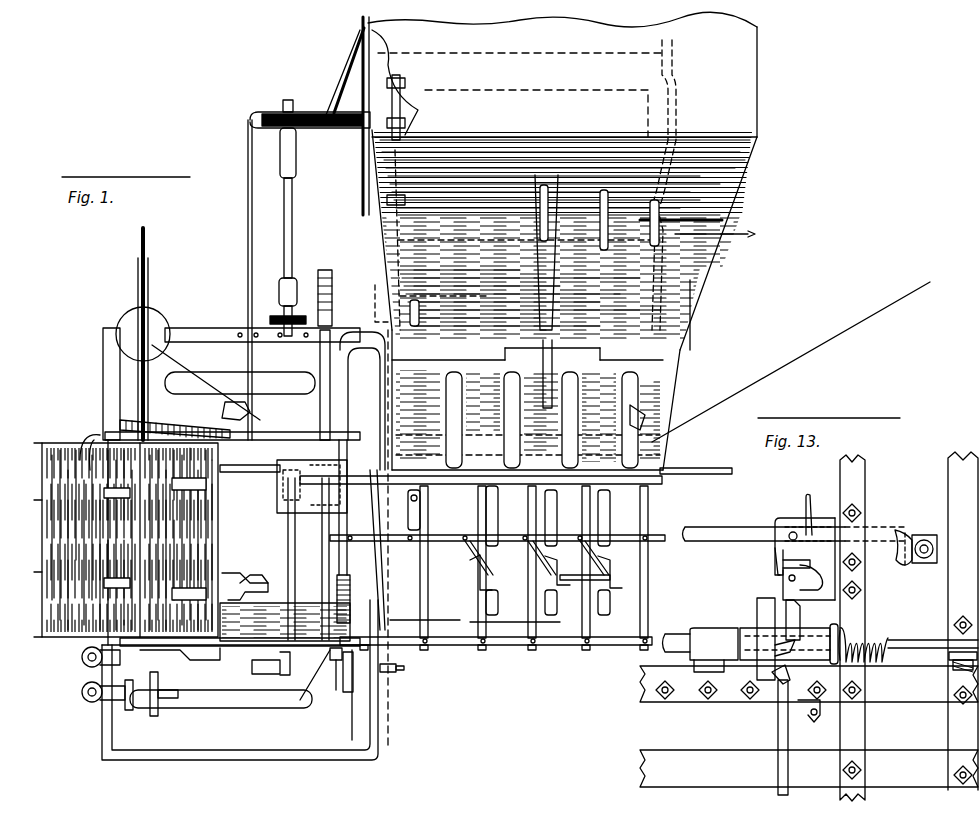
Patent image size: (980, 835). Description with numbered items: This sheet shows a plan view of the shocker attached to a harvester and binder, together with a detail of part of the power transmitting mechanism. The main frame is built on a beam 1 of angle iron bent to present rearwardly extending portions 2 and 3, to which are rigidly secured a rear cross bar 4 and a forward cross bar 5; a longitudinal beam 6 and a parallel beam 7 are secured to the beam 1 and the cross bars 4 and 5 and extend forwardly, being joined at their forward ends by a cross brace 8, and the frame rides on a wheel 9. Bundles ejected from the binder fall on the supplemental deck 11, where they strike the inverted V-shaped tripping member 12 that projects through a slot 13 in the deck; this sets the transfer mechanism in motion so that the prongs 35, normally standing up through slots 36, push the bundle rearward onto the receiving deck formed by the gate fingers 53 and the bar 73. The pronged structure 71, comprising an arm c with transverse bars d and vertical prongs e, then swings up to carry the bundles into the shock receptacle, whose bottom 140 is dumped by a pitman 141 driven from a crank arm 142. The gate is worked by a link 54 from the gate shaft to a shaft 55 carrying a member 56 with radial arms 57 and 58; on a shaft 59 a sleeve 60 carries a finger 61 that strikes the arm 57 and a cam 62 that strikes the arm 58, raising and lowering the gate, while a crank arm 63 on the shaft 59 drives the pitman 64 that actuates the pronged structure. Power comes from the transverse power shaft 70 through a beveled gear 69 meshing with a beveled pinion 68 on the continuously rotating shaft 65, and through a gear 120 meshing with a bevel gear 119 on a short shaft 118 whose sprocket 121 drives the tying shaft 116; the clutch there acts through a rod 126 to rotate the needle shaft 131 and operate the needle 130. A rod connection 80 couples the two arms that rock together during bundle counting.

In FIG. 1, the beam 1 is at (360, 727).
In FIG. 13, the beam 1 is at (809, 768).
In FIG. 1, the rearwardly extending portion 2 is at (250, 760).
In FIG. 1, the rearwardly extending portion 3 is at (212, 334).
In FIG. 1, the rear cross bar 4 is at (107, 377).
In FIG. 1, the forward cross bar 5 is at (336, 692).
In FIG. 13, the forward cross bar 5 is at (932, 697).
In FIG. 1, the longitudinal beam 6 is at (252, 473).
In FIG. 13, the longitudinal beam 6 is at (866, 741).
In FIG. 1, the longitudinal beam 7 is at (450, 612).
In FIG. 1, the cross brace 8 is at (592, 577).
In FIG. 1, the wheel 9 is at (243, 383).
In FIG. 1, the supplemental deck 11 is at (562, 241).
In FIG. 1, the tripping member 12 is at (548, 345).
In FIG. 1, the slot 13 is at (645, 405).
In FIG. 1, the prongs 35 is at (428, 492).
In FIG. 1, the slots 36 is at (506, 404).
In FIG. 1, the fingers 53 is at (478, 519).
In FIG. 13, the link 54 is at (812, 723).
In FIG. 13, the shaft 55 is at (796, 618).
In FIG. 13, the member 56 is at (788, 580).
In FIG. 13, the radial arm 57 is at (783, 568).
In FIG. 13, the radial arm 58 is at (822, 575).
In FIG. 1, the shaft 59 is at (288, 537).
In FIG. 13, the shaft 59 is at (735, 532).
In FIG. 13, the sleeve 60 is at (786, 520).
In FIG. 13, the finger 61 is at (776, 558).
In FIG. 13, the cam 62 is at (810, 497).
In FIG. 13, the crank arm 63 is at (905, 535).
In FIG. 13, the pitman 64 is at (920, 560).
In FIG. 13, the shaft 65 is at (778, 737).
In FIG. 13, the beveled pinion 68 is at (772, 680).
In FIG. 13, the beveled gear 69 is at (757, 624).
In FIG. 1, the power shaft 70 is at (242, 703).
In FIG. 13, the power shaft 70 is at (666, 637).
In FIG. 1, the pronged structure 71 is at (490, 560).
In FIG. 1, the bar 73 is at (530, 590).
In FIG. 1, the rod connection 80 is at (376, 586).
In FIG. 1, the shaft 116 is at (222, 655).
In FIG. 1, the shaft 118 is at (388, 672).
In FIG. 1, the bevel gear 119 is at (308, 696).
In FIG. 1, the gear 120 is at (312, 665).
In FIG. 1, the sprocket 121 is at (358, 685).
In FIG. 1, the rod 126 is at (385, 514).
In FIG. 1, the needle 130 is at (148, 280).
In FIG. 1, the needle shaft 131 is at (228, 424).
In FIG. 1, the bottom 140 is at (126, 540).
In FIG. 1, the pitman 141 is at (230, 574).
In FIG. 1, the crank arm 142 is at (250, 583).
In FIG. 1, the arm c is at (448, 561).
In FIG. 1, the transverse bars d is at (650, 586).
In FIG. 1, the vertical prongs e is at (561, 605).